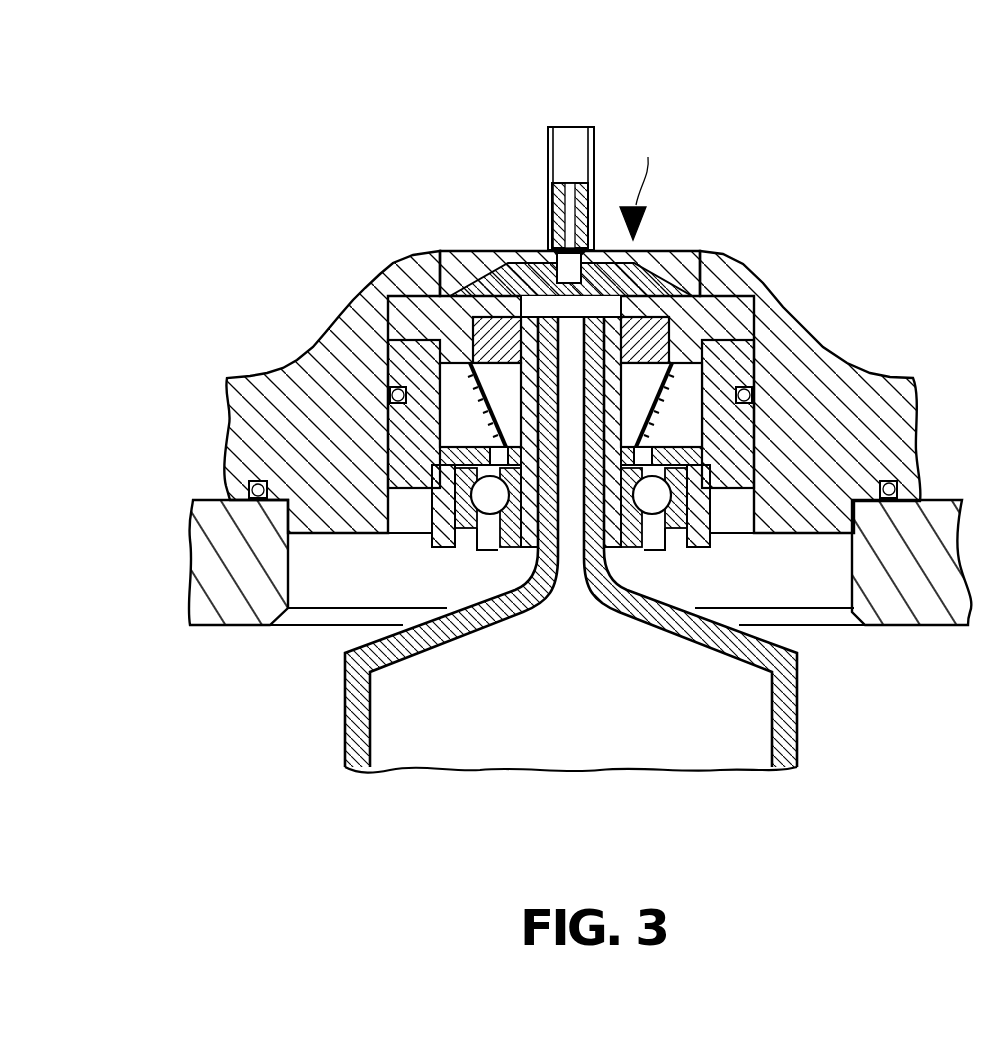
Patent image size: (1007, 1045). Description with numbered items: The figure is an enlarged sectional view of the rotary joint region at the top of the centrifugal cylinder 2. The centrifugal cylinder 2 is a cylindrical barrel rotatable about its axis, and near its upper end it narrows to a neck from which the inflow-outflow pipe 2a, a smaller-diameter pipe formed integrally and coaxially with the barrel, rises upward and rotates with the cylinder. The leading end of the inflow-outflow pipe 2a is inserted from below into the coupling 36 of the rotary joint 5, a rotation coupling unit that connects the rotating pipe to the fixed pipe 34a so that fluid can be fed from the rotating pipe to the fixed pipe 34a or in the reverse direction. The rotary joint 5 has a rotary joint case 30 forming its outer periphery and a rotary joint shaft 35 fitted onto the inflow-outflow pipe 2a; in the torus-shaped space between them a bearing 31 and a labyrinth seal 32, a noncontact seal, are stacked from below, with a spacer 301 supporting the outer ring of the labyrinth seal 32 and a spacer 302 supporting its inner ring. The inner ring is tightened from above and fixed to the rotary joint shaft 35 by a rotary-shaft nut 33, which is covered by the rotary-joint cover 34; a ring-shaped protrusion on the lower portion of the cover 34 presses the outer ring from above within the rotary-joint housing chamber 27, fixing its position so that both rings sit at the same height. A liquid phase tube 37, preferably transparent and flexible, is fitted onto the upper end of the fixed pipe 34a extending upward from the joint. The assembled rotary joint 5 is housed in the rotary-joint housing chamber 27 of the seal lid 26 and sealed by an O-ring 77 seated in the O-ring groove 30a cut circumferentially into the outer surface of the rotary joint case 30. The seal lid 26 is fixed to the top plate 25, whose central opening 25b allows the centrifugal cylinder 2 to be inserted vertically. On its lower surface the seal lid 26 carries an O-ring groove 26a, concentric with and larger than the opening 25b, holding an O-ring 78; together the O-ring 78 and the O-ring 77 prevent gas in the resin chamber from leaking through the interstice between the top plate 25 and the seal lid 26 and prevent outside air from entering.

The centrifugal cylinder 2 is at (798, 710).
The inflow-outflow pipe 2a is at (584, 513).
The rotary joint 5 is at (642, 179).
The top plate 25 is at (193, 520).
The opening 25b is at (289, 575).
The seal lid 26 is at (228, 378).
The O-ring groove 26a is at (252, 484).
The rotary-joint housing chamber 27 is at (690, 283).
The rotary joint case 30 is at (748, 335).
The O-ring groove 30a is at (395, 392).
The bearing 31 is at (683, 487).
The labyrinth seal 32 is at (392, 298).
The rotary-shaft nut 33 is at (453, 290).
The rotary-joint cover 34 is at (483, 276).
The fixed pipe 34a is at (574, 217).
The rotary joint shaft 35 is at (617, 552).
The coupling 36 is at (547, 270).
The liquid phase tube 37 is at (594, 157).
The O-ring 77 is at (746, 392).
The O-ring 78 is at (889, 484).
The spacer 301 is at (440, 447).
The spacer 302 is at (630, 447).